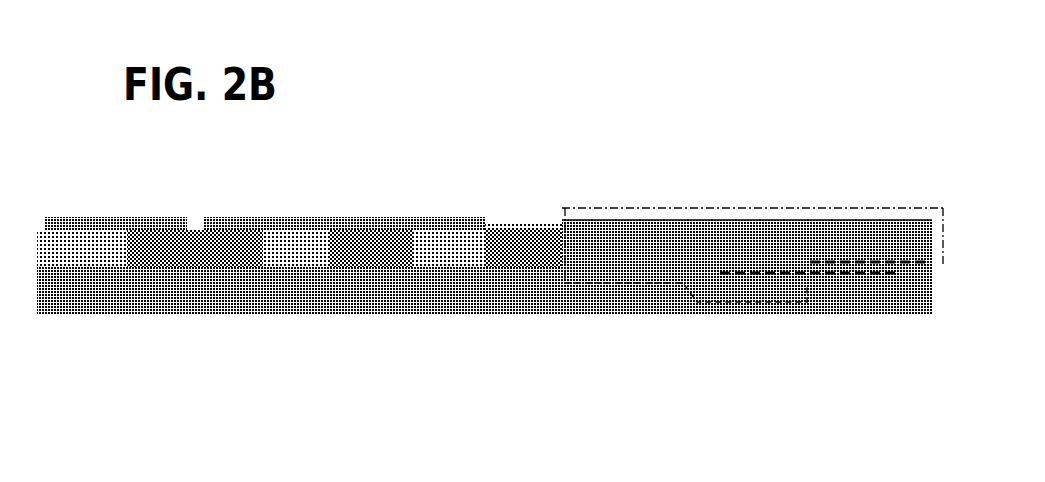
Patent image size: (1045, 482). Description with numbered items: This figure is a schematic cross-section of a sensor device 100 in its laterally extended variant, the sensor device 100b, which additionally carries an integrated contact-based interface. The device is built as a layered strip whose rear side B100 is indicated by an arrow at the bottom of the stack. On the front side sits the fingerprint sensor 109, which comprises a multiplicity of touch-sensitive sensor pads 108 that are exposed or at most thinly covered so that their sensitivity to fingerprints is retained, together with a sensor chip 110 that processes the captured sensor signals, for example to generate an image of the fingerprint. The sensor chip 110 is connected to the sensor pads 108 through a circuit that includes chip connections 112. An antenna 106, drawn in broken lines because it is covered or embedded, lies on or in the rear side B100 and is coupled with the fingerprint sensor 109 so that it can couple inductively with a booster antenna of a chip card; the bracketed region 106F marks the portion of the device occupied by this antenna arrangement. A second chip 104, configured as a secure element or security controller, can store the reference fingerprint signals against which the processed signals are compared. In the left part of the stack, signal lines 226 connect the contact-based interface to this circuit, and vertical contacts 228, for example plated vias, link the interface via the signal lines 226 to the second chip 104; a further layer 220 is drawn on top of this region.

The sensor device 100 is at (753, 168).
The sensor device 100b is at (708, 127).
The second chip 104 is at (868, 210).
The antenna 106 is at (623, 295).
The terminal region 106F is at (669, 250).
The sensor pads 108 is at (605, 235).
The fingerprint sensor 109 is at (630, 206).
The sensor chip 110 is at (740, 282).
The chip connections 112 is at (597, 253).
The cover layer 220 is at (150, 218).
The signal lines 226 is at (222, 272).
The vertical contacts 228 is at (127, 233).
The rear side B100 is at (491, 250).